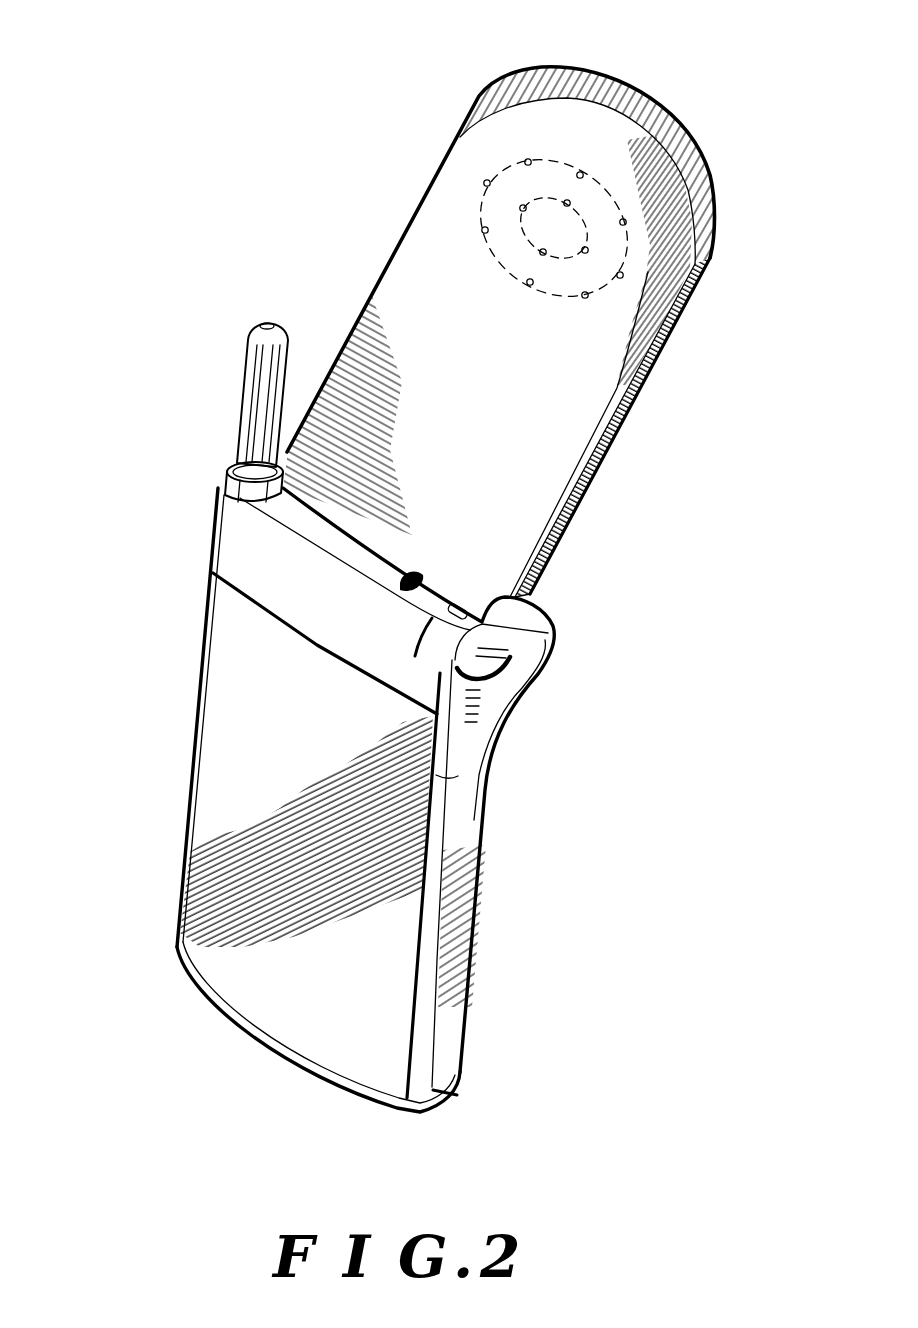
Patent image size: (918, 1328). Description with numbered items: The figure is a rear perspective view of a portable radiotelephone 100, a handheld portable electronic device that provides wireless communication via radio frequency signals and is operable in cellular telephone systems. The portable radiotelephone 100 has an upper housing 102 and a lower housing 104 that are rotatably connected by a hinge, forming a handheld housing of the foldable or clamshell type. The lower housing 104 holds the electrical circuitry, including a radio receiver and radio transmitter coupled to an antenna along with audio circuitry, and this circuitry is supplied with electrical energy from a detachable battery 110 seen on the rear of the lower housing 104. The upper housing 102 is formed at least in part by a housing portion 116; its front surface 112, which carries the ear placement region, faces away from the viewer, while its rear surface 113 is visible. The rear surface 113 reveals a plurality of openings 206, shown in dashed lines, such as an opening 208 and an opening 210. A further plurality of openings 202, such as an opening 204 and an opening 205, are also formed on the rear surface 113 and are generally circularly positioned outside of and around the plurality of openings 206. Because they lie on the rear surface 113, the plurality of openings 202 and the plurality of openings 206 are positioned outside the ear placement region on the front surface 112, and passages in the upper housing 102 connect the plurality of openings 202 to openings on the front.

The portable radiotelephone 100 is at (193, 485).
The upper housing 102 is at (353, 225).
The lower housing 104 is at (169, 768).
The detachable battery 110 is at (222, 967).
The front surface 112 is at (705, 266).
The rear surface 113 is at (680, 160).
The housing portion 116 is at (657, 372).
The plurality of openings 202 is at (482, 172).
The opening 204 is at (579, 172).
The opening 205 is at (530, 285).
The plurality of openings 206 is at (526, 246).
The opening 208 is at (544, 256).
The opening 210 is at (570, 202).